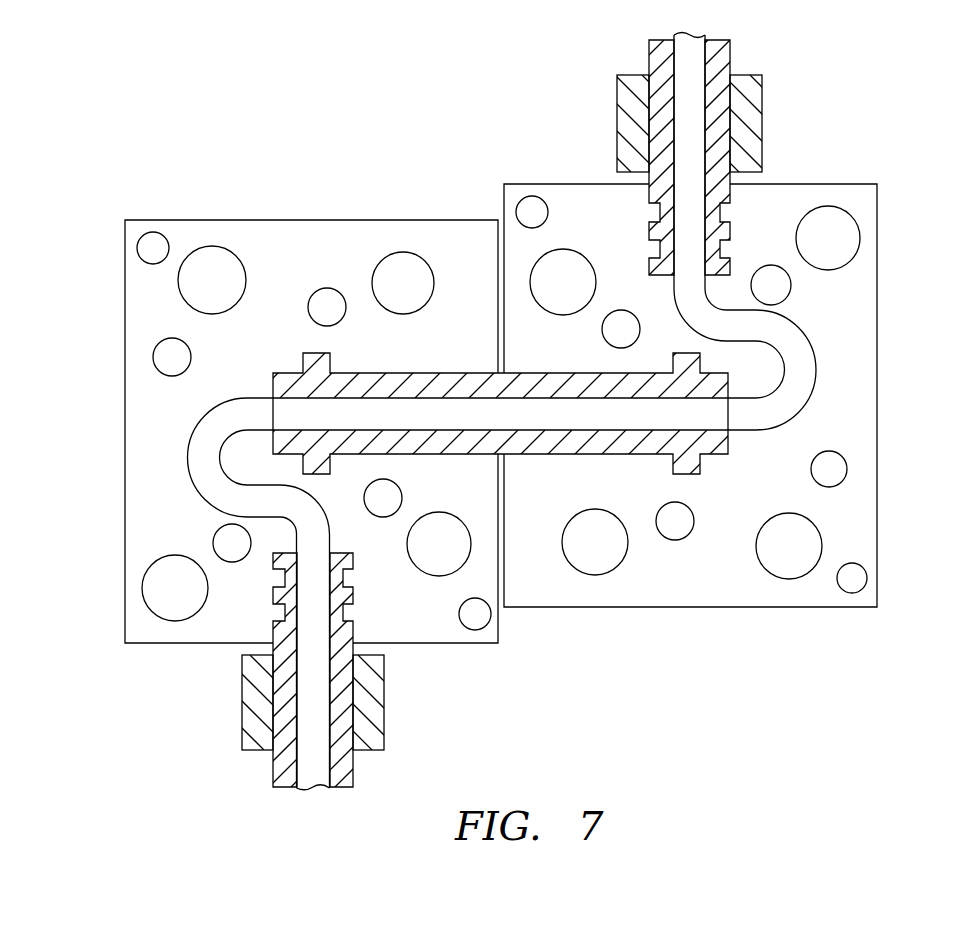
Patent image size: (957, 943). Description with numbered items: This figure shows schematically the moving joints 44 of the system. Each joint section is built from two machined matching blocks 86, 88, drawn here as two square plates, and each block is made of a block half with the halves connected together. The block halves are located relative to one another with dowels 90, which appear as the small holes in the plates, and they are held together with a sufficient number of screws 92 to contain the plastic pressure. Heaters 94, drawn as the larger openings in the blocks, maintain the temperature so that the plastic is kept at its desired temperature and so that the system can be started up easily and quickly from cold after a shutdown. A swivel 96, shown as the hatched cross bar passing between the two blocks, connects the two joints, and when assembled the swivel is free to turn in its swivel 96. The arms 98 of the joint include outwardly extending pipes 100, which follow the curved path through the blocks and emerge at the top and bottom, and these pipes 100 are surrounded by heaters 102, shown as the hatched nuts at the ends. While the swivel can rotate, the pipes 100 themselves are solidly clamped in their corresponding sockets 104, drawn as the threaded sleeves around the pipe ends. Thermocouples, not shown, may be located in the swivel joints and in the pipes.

The moving joints 44 is at (455, 185).
The machined matching block 86 is at (260, 222).
The machined matching block 88 is at (855, 405).
The dowels 90 is at (140, 248).
The screws 92 is at (157, 360).
The heaters 94 is at (410, 262).
The swivel 96 is at (475, 373).
The arms 98 is at (212, 722).
The pipes 100 is at (290, 778).
The heaters 102 is at (377, 722).
The sockets 104 is at (335, 610).